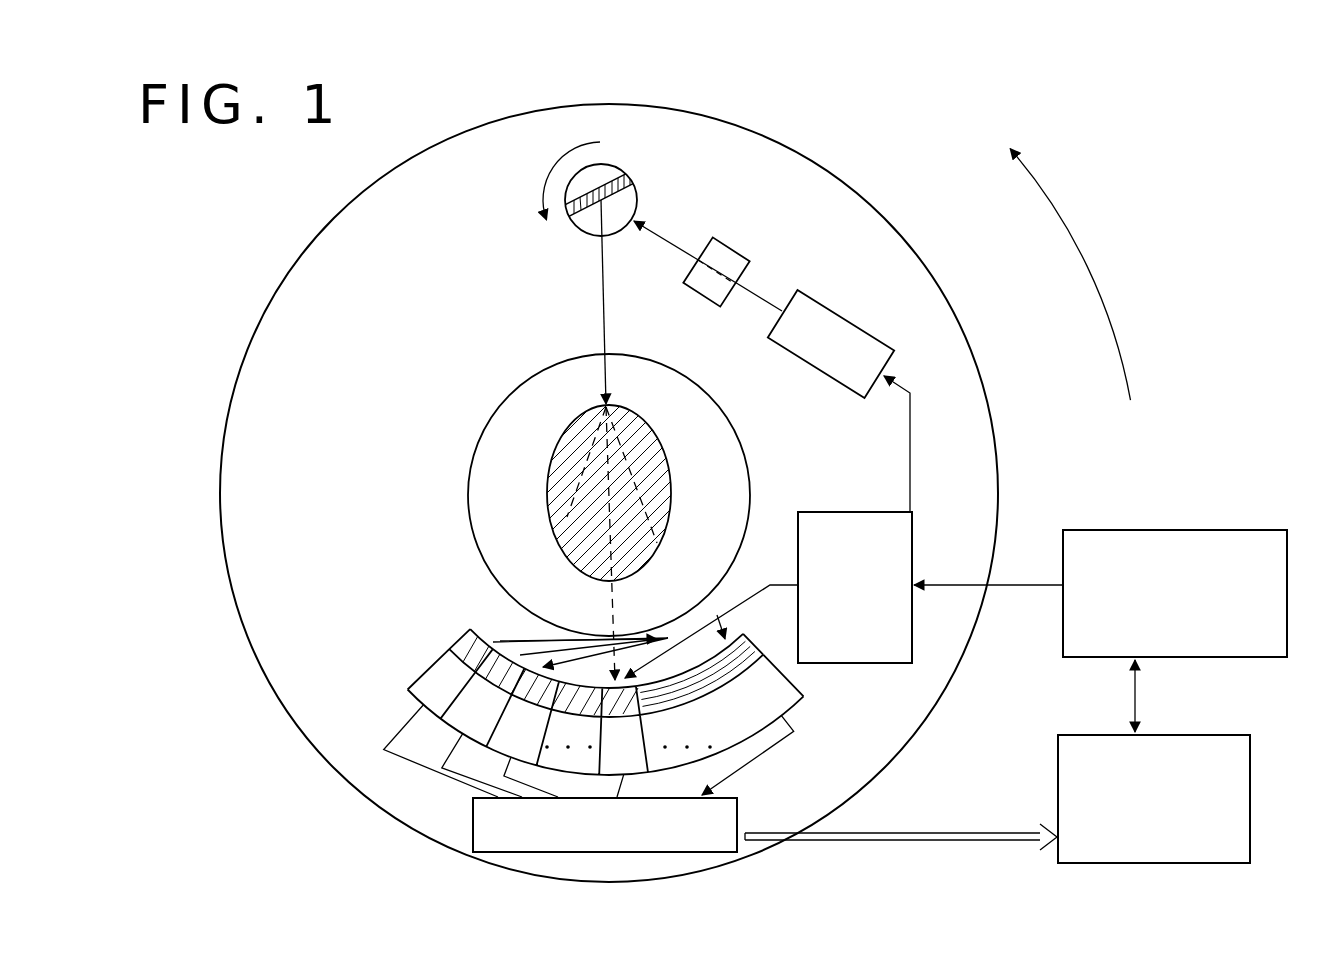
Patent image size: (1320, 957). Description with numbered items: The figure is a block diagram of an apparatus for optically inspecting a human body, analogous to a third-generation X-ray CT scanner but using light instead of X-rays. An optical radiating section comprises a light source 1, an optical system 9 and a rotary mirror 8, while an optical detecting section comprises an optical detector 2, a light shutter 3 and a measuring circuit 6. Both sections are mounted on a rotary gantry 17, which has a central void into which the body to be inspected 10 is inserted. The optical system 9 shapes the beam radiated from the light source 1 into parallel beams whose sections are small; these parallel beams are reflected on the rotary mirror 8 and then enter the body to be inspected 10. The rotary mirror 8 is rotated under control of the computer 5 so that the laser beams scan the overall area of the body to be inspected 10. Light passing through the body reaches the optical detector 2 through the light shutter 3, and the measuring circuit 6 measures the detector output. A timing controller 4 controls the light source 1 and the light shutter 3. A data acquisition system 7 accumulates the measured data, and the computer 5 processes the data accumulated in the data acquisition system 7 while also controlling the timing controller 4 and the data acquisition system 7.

The light source 1 is at (878, 337).
The optical detector 2 is at (420, 670).
The light shutter 3 is at (464, 634).
The timing controller 4 is at (912, 532).
The computer 5 is at (1128, 530).
The measuring circuit 6 is at (738, 809).
The data acquisition system 7 is at (1200, 735).
The rotary mirror 8 is at (630, 170).
The optical system 9 is at (743, 252).
The body to be inspected 10 is at (672, 500).
The rotary gantry 17 is at (252, 360).